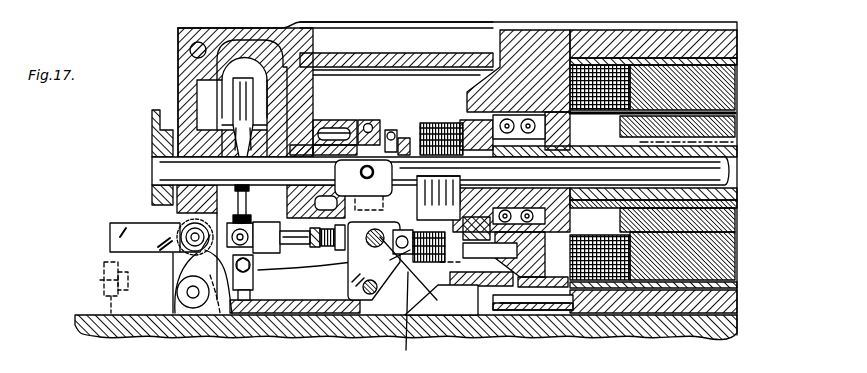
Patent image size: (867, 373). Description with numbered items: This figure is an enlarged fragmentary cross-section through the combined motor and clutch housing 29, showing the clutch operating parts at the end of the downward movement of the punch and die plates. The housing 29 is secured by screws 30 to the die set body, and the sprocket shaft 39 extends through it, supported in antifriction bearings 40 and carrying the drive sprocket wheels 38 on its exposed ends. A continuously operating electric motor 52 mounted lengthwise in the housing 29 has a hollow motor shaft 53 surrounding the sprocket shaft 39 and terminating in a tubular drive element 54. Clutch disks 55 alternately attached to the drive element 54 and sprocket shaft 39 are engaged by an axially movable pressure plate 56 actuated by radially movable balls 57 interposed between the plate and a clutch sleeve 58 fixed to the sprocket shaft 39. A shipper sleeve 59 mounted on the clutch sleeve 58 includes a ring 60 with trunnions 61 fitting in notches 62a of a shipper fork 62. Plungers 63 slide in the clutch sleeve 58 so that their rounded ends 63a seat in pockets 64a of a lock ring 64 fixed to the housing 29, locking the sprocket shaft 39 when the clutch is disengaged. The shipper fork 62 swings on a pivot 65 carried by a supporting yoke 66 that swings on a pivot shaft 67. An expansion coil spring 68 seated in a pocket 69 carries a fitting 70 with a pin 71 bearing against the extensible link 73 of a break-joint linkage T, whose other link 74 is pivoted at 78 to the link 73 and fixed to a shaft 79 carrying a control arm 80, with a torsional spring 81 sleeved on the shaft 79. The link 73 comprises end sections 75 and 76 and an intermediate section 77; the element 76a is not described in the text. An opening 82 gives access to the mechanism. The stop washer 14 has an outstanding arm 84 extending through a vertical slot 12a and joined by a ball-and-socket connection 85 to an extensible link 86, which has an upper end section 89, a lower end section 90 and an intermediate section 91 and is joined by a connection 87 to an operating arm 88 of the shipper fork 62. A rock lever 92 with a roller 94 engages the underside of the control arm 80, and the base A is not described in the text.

The vertical slot 12a is at (243, 58).
The stop washer 14 is at (255, 125).
The combined motor and clutch housing 29 is at (178, 46).
The screws 30 is at (190, 52).
The drive sprocket wheels 38 is at (152, 136).
The sprocket shaft 39 is at (730, 172).
The antifriction bearings 40 is at (190, 125).
The electric motor 52 is at (710, 95).
The hollow motor shaft 53 is at (738, 198).
The tubular drive element 54 is at (470, 120).
The clutch disks 55 is at (430, 122).
The pressure plate 56 is at (424, 178).
The balls 57 is at (404, 138).
The clutch sleeve 58 is at (360, 118).
The shipper sleeve 59 is at (392, 130).
The ring 60 is at (372, 120).
The trunnions 61 is at (335, 166).
The shipper fork 62 is at (438, 198).
The notches 62a is at (337, 202).
The plungers 63 is at (338, 128).
The rounded ends 63a is at (333, 120).
The lock ring 64 is at (292, 146).
The pockets 64a is at (330, 118).
The shipper fork supporting pivot 65 is at (376, 248).
The supporting yoke 66 is at (358, 286).
The pivot shaft 67 is at (370, 295).
The expansion coil spring 68 is at (436, 248).
The pocket 69 is at (470, 260).
The fitting 70 is at (403, 236).
The pin 71 is at (476, 276).
The extensible link 73 is at (282, 215).
The link 74 is at (238, 224).
The end section 75 is at (354, 262).
The end section 76 is at (270, 228).
The rod 76a is at (290, 245).
The intermediate section 77 is at (318, 268).
The pivot 78 is at (225, 245).
The shaft 79 is at (190, 237).
The control arm 80 is at (137, 223).
The torsional spring 81 is at (190, 252).
The opening 82 is at (416, 318).
The outstanding arm 84 is at (228, 125).
The ball-and-socket connection 85 is at (282, 20).
The extensible link 86 is at (152, 188).
The connection 87 is at (245, 290).
The operating arm 88 is at (258, 272).
The upper end section 89 is at (217, 76).
The lower end section 90 is at (190, 44).
The intermediate section 91 is at (250, 186).
The rock lever 92 is at (104, 298).
The roller 94 is at (128, 294).
The base A is at (724, 337).
The break-joint linkage T is at (262, 272).